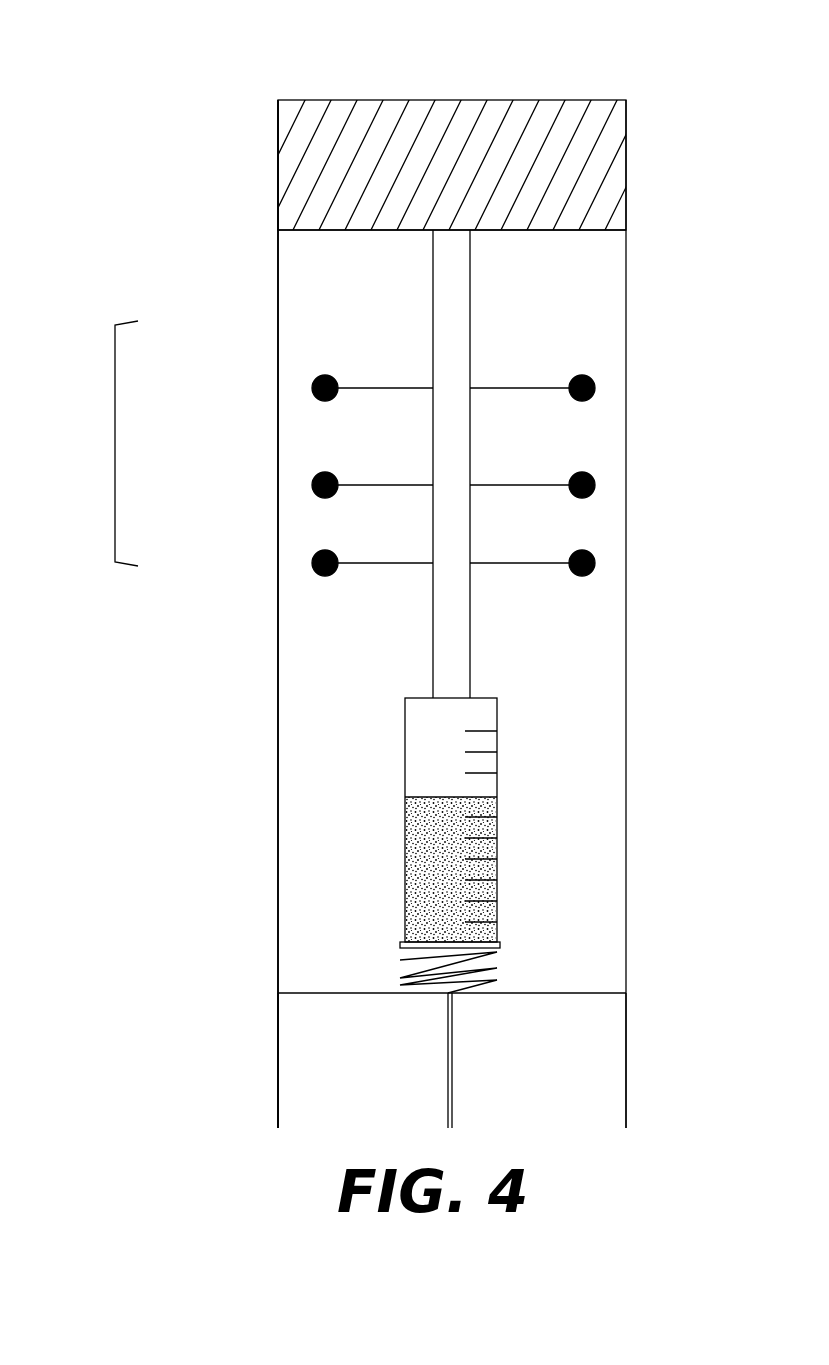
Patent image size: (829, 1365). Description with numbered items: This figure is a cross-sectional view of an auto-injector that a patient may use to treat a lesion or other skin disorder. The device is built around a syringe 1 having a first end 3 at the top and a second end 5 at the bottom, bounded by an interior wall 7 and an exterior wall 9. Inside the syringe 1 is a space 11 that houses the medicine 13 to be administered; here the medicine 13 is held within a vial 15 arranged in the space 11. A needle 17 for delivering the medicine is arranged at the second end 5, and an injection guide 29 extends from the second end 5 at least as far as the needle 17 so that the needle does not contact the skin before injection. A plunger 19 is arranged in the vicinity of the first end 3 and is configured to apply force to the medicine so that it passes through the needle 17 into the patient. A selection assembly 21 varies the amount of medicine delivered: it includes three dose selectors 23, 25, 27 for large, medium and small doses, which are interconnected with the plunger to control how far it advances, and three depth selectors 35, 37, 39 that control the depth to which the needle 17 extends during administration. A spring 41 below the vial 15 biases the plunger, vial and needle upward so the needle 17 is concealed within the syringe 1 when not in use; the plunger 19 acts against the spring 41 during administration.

The syringe 1 is at (278, 730).
The first end 3 is at (323, 100).
The second end 5 is at (278, 993).
The interior wall 7 is at (280, 670).
The exterior wall 9 is at (278, 835).
The space 11 is at (497, 745).
The medicine 13 is at (455, 872).
The vial 15 is at (497, 845).
The needle 17 is at (453, 1030).
The plunger 19 is at (572, 218).
The selection assembly 21 is at (115, 446).
The dose selector 23 is at (643, 388).
The dose selector 25 is at (643, 485).
The dose selector 27 is at (643, 563).
The injection guide 29 is at (278, 1108).
The depth selector 35 is at (257, 388).
The depth selector 37 is at (257, 485).
The depth selector 39 is at (257, 563).
The spring 41 is at (500, 968).